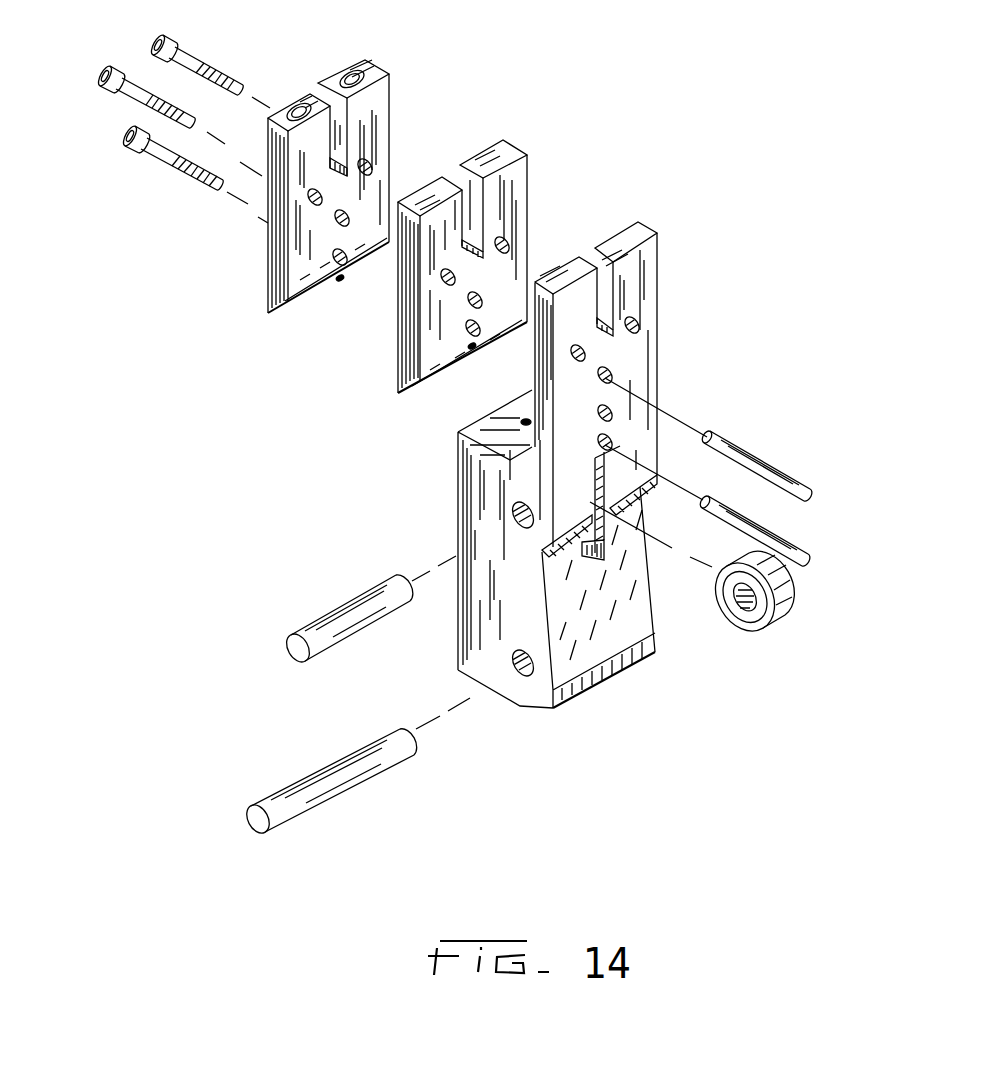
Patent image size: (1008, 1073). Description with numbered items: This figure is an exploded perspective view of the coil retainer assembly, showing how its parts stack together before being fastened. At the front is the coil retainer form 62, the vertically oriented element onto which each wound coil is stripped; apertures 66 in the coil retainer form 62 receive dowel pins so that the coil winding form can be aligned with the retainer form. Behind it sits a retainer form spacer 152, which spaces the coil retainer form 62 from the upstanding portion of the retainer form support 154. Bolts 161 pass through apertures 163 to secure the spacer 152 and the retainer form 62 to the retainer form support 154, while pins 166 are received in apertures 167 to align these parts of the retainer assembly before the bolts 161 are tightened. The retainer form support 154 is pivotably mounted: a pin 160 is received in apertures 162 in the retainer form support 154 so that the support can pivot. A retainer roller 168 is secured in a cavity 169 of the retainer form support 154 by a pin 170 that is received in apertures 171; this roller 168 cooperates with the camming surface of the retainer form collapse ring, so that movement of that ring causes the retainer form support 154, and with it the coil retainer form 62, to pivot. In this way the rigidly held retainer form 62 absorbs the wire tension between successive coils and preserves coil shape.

The bolts 161 is at (121, 132).
The apertures 66 is at (345, 84).
The coil retainer form 62 is at (373, 120).
The apertures 163 is at (343, 254).
The apertures 167 is at (345, 268).
The retainer form spacers 152 is at (513, 190).
The retainer form supports 154 is at (632, 266).
The apertures 162 is at (528, 680).
The apertures 171 is at (515, 508).
The cavities 169 is at (608, 515).
The pins 170 is at (332, 626).
The pins 160 is at (318, 793).
The pins 166 is at (808, 553).
The retainer rollers 168 is at (783, 617).